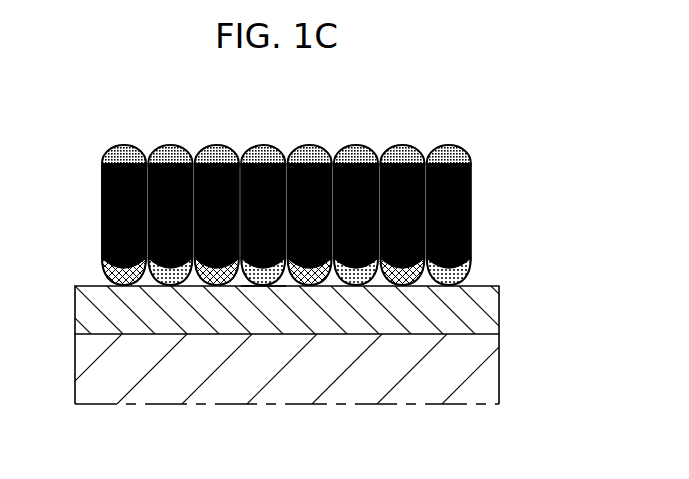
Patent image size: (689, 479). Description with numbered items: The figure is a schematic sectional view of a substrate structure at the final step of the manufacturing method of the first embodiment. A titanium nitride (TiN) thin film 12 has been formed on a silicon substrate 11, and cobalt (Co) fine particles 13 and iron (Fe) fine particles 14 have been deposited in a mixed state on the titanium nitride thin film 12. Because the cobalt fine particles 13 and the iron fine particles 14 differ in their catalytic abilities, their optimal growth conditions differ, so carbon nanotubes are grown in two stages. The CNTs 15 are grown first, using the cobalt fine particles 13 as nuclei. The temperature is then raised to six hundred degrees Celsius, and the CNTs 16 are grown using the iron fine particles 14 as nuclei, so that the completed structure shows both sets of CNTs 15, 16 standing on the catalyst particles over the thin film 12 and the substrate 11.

The silicon substrate 11 is at (478, 372).
The titanium nitride thin film 12 is at (475, 313).
The cobalt fine particles 13 is at (117, 282).
The iron fine particles 14 is at (262, 286).
The CNTs 15 is at (127, 157).
The CNTs 16 is at (175, 157).